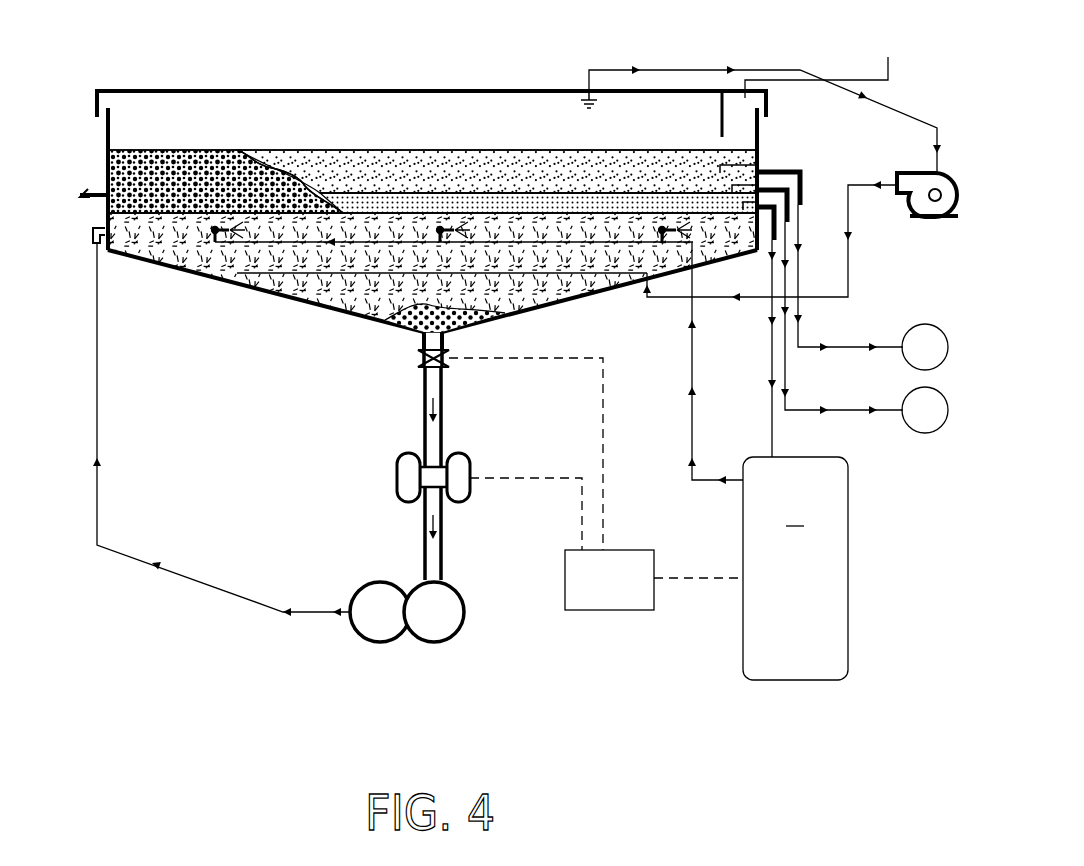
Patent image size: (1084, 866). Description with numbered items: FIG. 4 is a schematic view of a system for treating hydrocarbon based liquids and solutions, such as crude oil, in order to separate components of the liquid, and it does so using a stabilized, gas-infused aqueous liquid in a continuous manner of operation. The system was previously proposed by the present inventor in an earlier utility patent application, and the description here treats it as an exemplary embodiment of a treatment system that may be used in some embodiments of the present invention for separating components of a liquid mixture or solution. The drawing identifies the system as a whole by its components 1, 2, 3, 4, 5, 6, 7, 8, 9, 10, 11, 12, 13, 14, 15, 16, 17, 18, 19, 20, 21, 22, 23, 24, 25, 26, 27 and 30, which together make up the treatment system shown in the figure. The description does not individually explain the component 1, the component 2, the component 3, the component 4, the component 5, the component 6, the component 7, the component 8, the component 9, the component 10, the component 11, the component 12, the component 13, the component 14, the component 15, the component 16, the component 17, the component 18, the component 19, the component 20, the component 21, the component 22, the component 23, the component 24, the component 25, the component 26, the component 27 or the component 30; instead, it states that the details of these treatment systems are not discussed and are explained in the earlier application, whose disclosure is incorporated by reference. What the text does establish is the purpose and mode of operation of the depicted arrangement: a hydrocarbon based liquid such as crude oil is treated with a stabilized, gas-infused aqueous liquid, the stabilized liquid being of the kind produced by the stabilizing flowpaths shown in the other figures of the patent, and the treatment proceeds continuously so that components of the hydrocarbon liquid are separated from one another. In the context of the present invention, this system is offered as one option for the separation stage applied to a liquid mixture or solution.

The component 1 is at (758, 137).
The component 2 is at (925, 347).
The component 3 is at (925, 410).
The component 4 is at (795, 568).
The component 5 is at (213, 238).
The component 6 is at (141, 246).
The component 7 is at (393, 197).
The component 8 is at (577, 179).
The component 9 is at (213, 182).
The component 10 is at (460, 455).
The component 11 is at (366, 625).
The component 12 is at (955, 177).
The component 13 is at (432, 137).
The component 14 is at (825, 59).
The component 15 is at (303, 274).
The component 16 is at (365, 91).
The component 17 is at (692, 400).
The component 18 is at (104, 188).
The component 19 is at (91, 240).
The component 20 is at (443, 342).
The component 21 is at (715, 117).
The component 22 is at (782, 167).
The component 23 is at (772, 168).
The component 24 is at (762, 226).
The component 25 is at (421, 358).
The component 26 is at (97, 393).
The component 27 is at (588, 82).
The component 30 is at (602, 611).